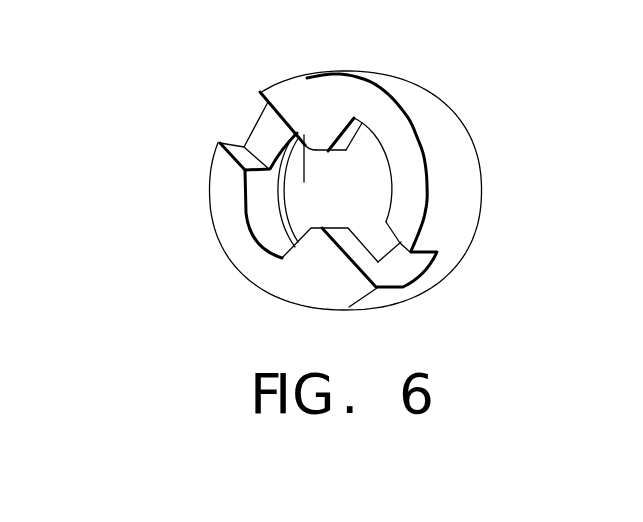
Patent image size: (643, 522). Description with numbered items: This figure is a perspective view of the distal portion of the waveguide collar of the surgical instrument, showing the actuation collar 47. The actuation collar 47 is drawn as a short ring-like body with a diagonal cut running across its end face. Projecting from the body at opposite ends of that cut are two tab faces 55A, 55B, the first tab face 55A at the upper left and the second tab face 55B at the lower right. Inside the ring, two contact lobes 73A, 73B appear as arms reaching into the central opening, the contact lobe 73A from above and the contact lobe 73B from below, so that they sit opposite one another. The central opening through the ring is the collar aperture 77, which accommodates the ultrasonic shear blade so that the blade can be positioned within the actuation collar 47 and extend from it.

The actuation collar 47 is at (497, 80).
The tab face 55A is at (241, 150).
The tab face 55B is at (410, 257).
The collar aperture 77 is at (258, 198).
The contact lobe 73A is at (304, 182).
The contact lobe 73B is at (355, 248).